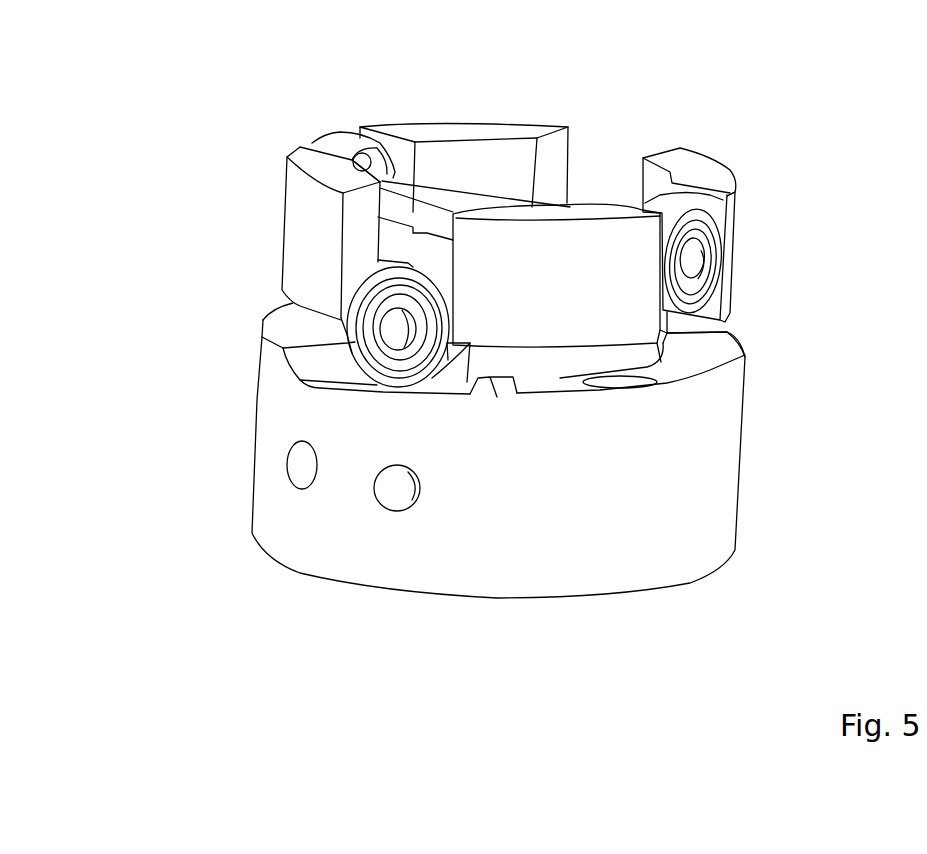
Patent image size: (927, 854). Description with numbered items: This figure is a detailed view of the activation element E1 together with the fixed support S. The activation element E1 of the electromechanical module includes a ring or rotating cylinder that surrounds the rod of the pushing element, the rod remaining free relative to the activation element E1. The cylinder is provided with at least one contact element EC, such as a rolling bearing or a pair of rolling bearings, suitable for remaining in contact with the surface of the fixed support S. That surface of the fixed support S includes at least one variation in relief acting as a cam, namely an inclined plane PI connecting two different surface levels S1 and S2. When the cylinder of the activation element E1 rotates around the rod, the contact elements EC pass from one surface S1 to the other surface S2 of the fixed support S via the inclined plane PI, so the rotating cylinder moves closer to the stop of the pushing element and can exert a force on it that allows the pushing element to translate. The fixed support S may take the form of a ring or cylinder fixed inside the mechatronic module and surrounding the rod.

The activation element E1 is at (760, 130).
The contact element EC is at (693, 258).
The inclined plane PI is at (383, 387).
The surface level S1 is at (333, 364).
The surface level S2 is at (491, 380).
The fixed support S is at (825, 553).